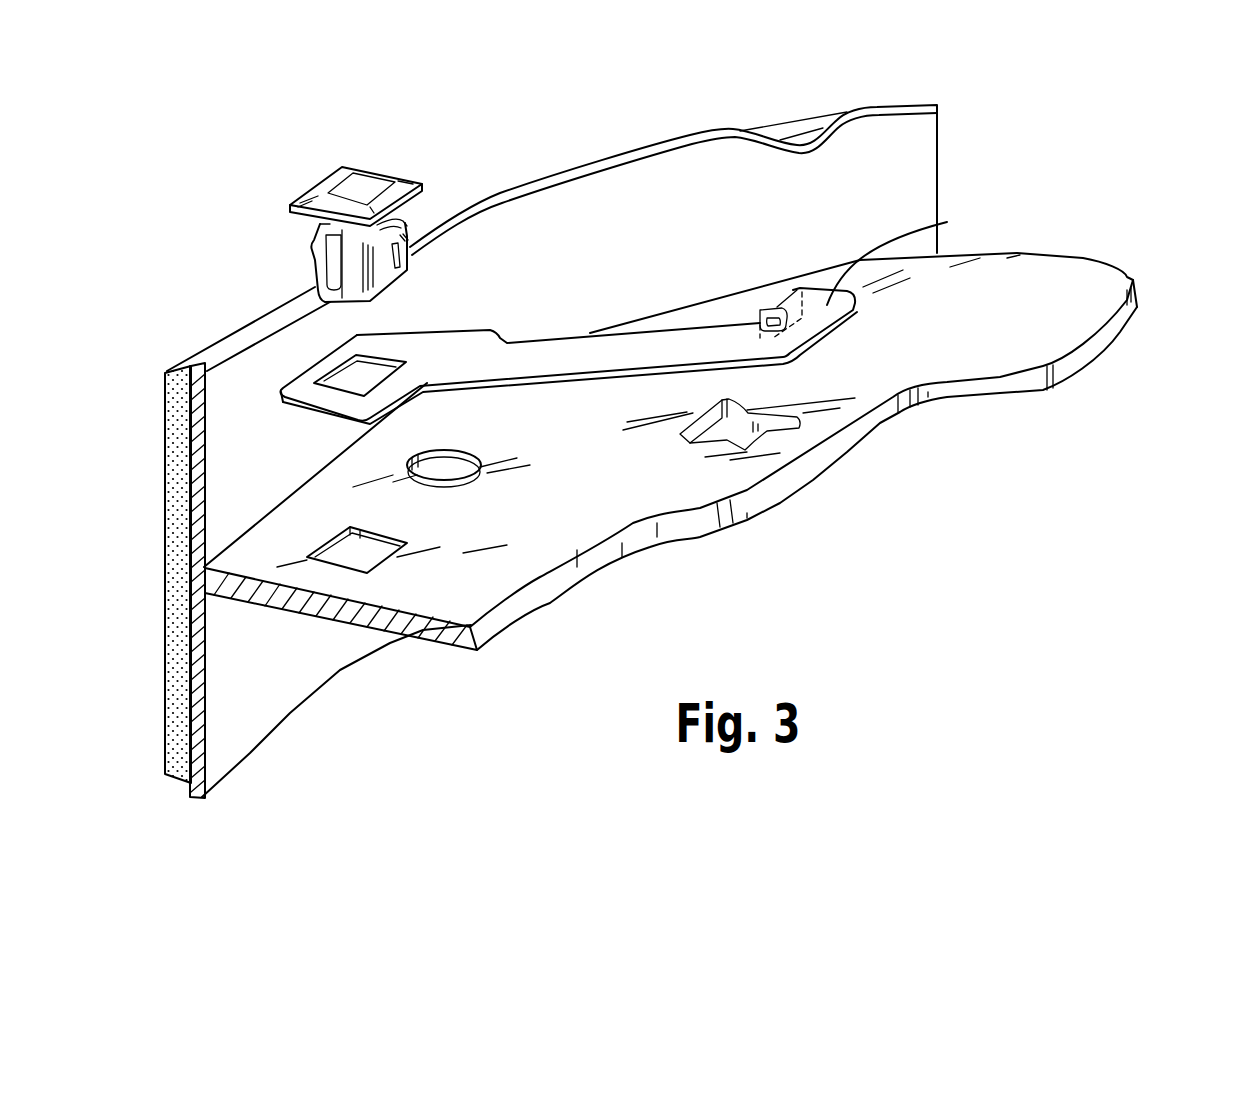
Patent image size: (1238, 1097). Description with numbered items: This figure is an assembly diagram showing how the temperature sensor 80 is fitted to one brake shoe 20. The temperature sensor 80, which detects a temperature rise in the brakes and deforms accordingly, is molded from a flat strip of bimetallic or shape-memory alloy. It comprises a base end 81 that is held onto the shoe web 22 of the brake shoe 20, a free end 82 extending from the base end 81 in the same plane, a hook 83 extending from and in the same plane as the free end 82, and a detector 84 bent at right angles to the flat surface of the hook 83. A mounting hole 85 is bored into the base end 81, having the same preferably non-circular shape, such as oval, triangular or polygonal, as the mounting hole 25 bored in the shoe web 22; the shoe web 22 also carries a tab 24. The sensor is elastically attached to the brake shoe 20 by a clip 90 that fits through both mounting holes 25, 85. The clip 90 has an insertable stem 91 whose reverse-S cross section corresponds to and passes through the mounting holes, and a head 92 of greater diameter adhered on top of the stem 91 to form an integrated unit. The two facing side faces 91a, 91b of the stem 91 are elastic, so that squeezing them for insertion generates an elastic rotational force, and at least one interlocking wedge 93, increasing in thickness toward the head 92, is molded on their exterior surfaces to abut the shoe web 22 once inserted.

The brake shoe 20 is at (262, 759).
The shoe web 22 is at (534, 593).
The bent tab 24 is at (772, 432).
The mounting hole 25 is at (367, 560).
The temperature sensor 80 is at (563, 314).
The base end 81 is at (303, 387).
The free end 82 is at (492, 346).
The hook 83 is at (937, 223).
The detector 84 is at (773, 308).
The mounting hole 85 is at (357, 383).
The clip 90 is at (358, 150).
The insertable stem 91 is at (376, 298).
The side face 91a is at (393, 266).
The side face 91b is at (318, 237).
The head 92 is at (332, 180).
The interlocking wedge 93 is at (408, 246).